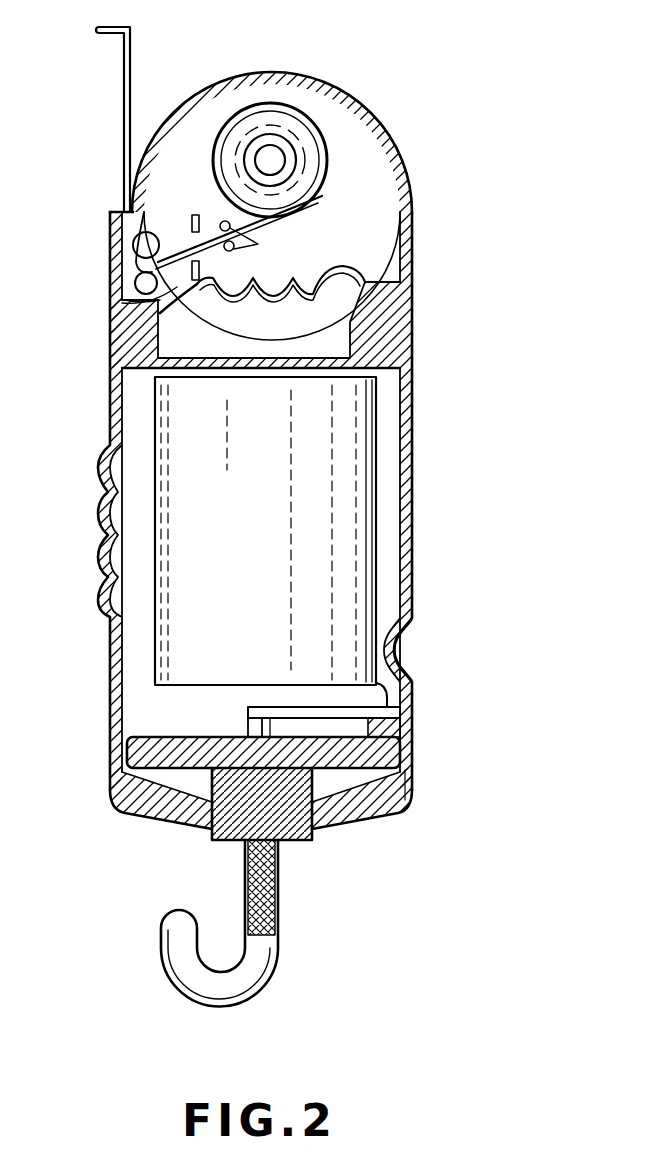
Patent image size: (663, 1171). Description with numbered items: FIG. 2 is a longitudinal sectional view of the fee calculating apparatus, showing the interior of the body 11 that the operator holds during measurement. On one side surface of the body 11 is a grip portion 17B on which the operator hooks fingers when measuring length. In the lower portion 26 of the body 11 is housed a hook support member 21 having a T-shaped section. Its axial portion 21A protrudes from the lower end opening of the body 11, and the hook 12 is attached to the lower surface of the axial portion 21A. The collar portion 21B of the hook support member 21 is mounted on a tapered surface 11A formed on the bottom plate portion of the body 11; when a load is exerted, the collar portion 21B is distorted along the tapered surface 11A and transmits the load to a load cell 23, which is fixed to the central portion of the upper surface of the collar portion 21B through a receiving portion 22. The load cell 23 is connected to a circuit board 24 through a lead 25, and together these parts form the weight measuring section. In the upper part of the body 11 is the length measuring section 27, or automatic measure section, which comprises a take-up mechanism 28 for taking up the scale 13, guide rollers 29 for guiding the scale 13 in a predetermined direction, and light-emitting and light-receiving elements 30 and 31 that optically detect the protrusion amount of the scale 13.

The body 11 is at (406, 395).
The tapered surface 11A is at (157, 780).
The hook 12 is at (254, 972).
The scale 13 is at (131, 62).
The grip portion 17B is at (415, 640).
The hook support member 21 is at (218, 828).
The axial portion 21A is at (298, 835).
The collar portion 21B is at (143, 738).
The receiving portion 22 is at (247, 730).
The load cell 23 is at (400, 713).
The circuit board 24 is at (366, 480).
The lead 25 is at (403, 685).
The lower portion 26 is at (420, 777).
The length measuring section 27 is at (336, 189).
The take-up mechanism 28 is at (293, 103).
The guide rollers 29 is at (138, 280).
The light-emitting element 30 is at (195, 215).
The light-receiving element 31 is at (135, 292).